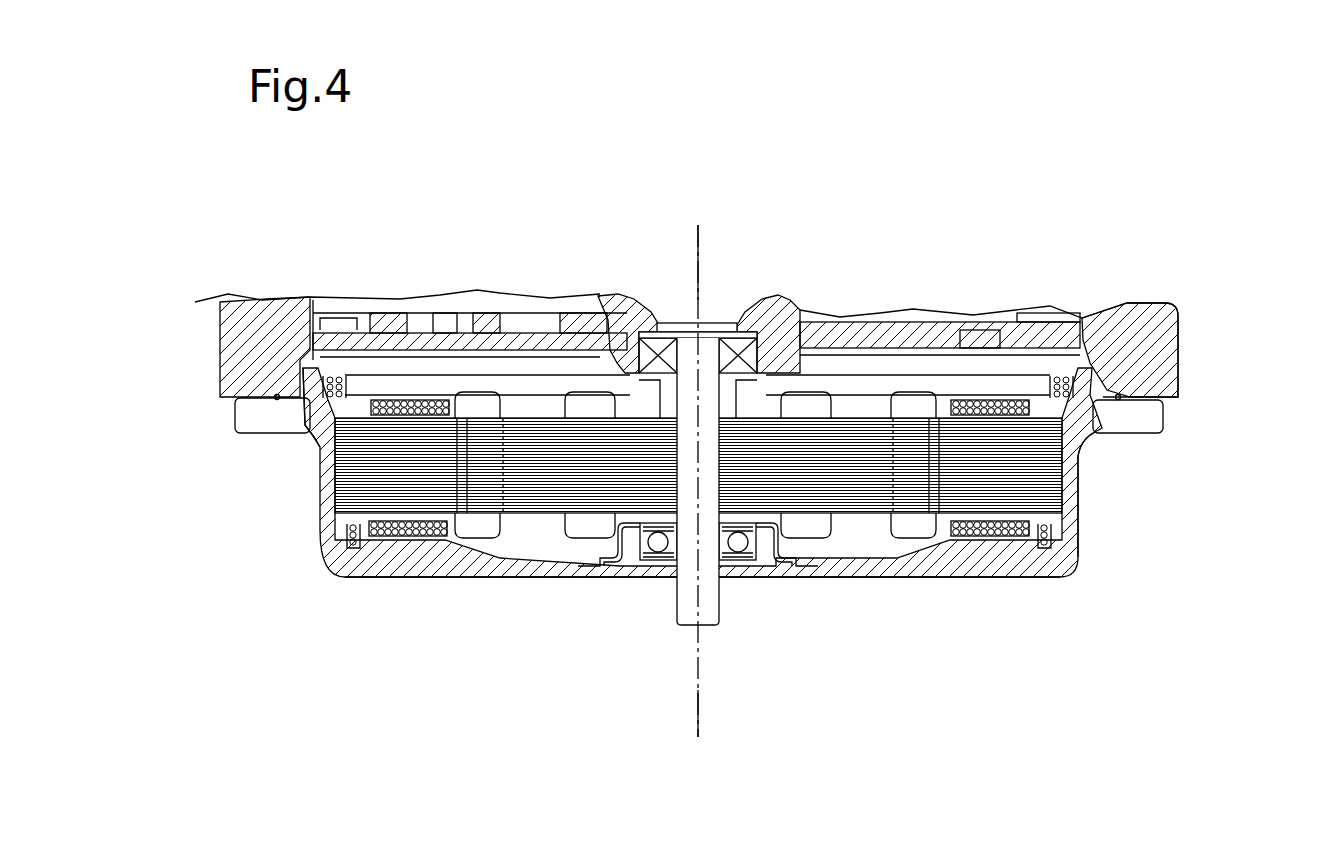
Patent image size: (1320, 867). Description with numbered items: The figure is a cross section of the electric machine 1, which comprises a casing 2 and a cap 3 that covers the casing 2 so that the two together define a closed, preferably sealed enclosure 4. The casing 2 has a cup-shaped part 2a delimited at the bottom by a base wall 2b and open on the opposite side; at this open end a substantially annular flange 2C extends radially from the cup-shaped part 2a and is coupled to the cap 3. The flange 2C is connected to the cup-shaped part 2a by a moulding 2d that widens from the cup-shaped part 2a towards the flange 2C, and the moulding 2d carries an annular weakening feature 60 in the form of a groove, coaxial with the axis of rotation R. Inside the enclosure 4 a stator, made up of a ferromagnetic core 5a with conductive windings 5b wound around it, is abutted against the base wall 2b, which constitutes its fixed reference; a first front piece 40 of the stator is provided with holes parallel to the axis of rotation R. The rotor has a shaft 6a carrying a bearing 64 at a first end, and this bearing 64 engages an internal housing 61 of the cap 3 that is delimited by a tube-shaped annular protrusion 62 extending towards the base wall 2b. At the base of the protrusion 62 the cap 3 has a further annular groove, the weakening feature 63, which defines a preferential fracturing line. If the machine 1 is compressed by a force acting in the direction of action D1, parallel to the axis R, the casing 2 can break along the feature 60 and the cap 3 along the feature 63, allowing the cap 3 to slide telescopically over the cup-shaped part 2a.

The electric machine 1 is at (693, 197).
The direction of action D1 is at (700, 305).
The casing 2 is at (1078, 507).
The cup-shaped part 2a is at (1078, 527).
The base wall 2b is at (837, 580).
The annular flange 2C is at (1115, 412).
The moulding 2d is at (1088, 443).
The cap 3 is at (1186, 322).
The enclosure 4 is at (213, 440).
The ferromagnetic core 5a is at (372, 491).
The conductive windings 5b is at (1013, 393).
The first front piece 40 is at (1047, 381).
The weakening feature 60 is at (307, 428).
The internal housing 61 is at (643, 380).
The annular protrusion 62 is at (632, 348).
The weakening feature 63 is at (612, 318).
The bearing 64 is at (762, 366).
The shaft 6a is at (707, 590).
The axis of rotation R is at (700, 686).